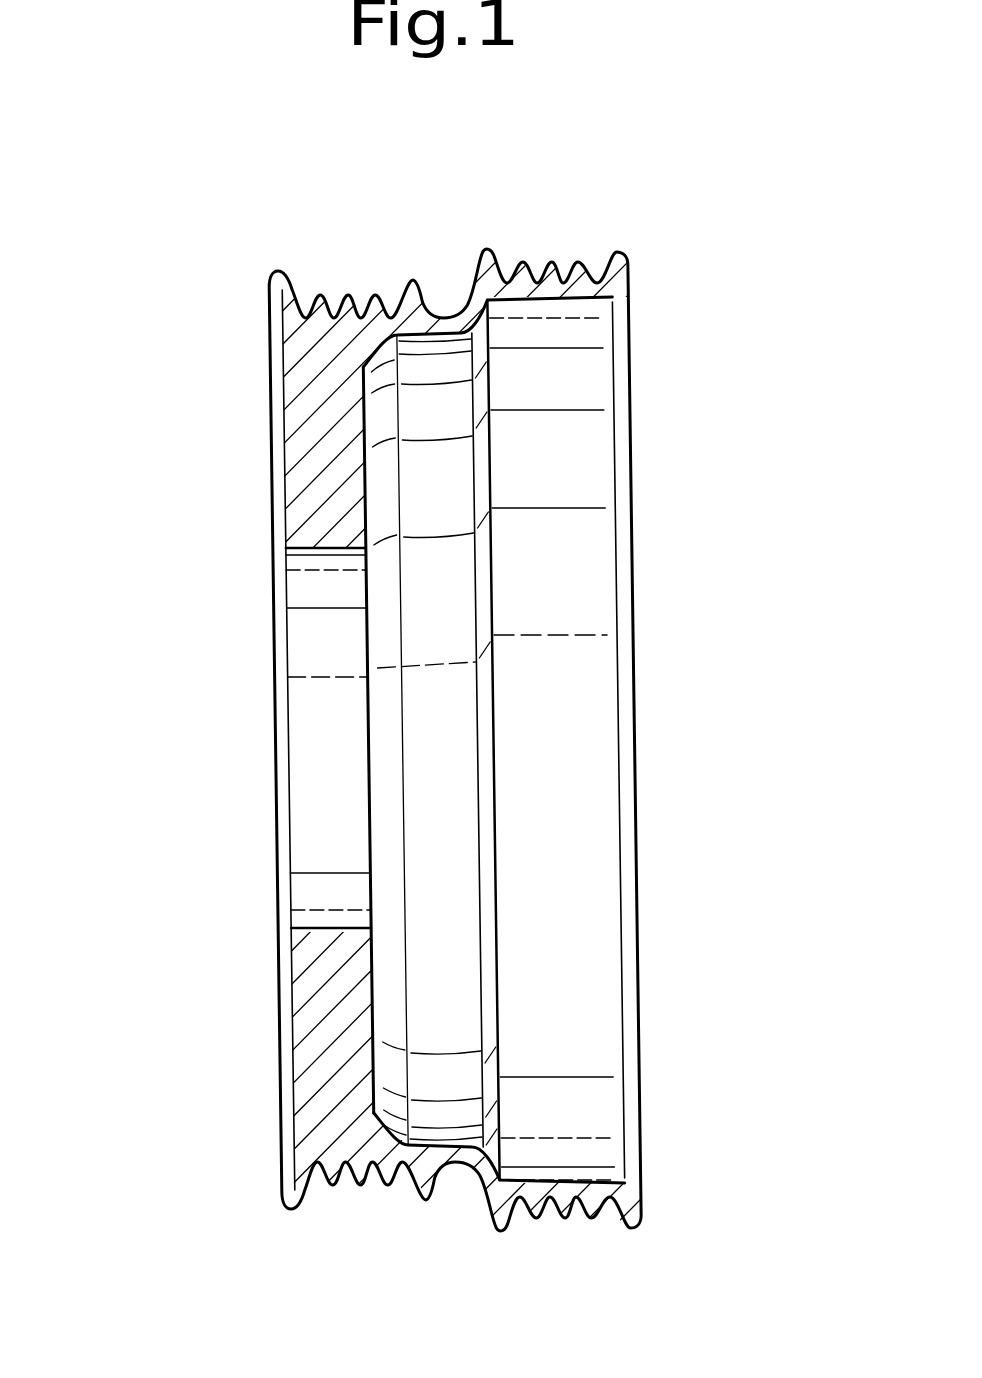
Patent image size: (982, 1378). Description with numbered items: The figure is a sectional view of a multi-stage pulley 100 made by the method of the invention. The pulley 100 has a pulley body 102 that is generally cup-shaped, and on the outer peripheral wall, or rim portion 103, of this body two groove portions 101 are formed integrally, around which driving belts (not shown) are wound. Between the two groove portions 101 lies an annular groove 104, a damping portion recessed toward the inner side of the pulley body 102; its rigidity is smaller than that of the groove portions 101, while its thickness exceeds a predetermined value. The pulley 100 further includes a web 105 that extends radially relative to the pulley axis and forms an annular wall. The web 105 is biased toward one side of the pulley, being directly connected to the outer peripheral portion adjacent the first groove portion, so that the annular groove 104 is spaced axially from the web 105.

The multi-stage pulley 100 is at (647, 439).
The groove portions 101 is at (319, 285).
The pulley body 102 is at (642, 1137).
The outer peripheral wall (rim portion) 103 is at (507, 247).
The annular groove (damping portion) 104 is at (438, 294).
The web 105 is at (310, 394).